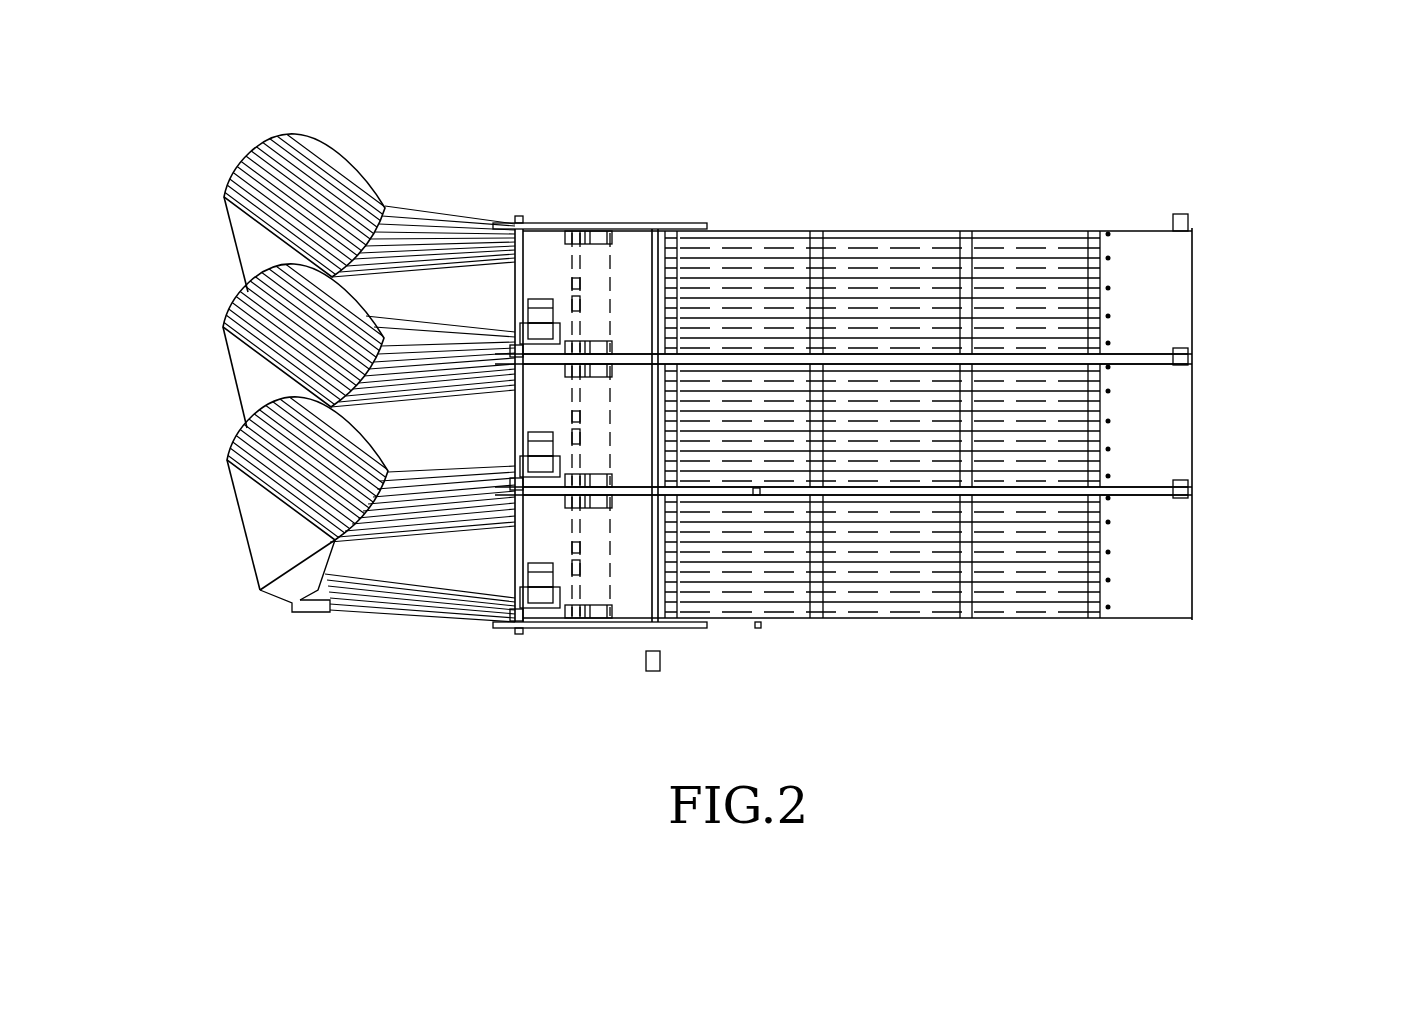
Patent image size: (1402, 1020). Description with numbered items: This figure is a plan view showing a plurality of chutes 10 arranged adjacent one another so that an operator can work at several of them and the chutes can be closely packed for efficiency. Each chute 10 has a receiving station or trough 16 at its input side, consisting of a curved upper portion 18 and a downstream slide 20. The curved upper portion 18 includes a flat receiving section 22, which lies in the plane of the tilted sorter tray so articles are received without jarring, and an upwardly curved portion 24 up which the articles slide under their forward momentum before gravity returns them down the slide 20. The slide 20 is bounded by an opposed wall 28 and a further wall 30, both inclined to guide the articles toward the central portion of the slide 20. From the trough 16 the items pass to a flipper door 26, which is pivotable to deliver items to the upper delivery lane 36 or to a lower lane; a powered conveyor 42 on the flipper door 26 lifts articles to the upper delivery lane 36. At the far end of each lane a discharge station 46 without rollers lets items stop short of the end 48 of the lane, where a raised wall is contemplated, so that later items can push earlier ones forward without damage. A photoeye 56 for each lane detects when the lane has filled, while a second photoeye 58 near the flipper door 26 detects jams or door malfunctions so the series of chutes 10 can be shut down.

The chute 10 is at (945, 453).
The receiving station or trough 16 is at (250, 370).
The curved upper portion 18 is at (325, 183).
The slide 20 is at (443, 288).
The flat receiving section 22 is at (245, 237).
The upwardly curved portion 24 is at (273, 158).
The flipper door 26 is at (628, 243).
The opposed wall 28 is at (330, 600).
The wall 30 is at (405, 512).
The upper delivery lane 36 is at (868, 263).
The powered conveyor 42 is at (541, 243).
The discharge station 46 is at (1183, 310).
The end of the lanes 48 is at (1192, 253).
The photoeye or photodetector 56 is at (757, 495).
The second photoeye 58 is at (652, 672).